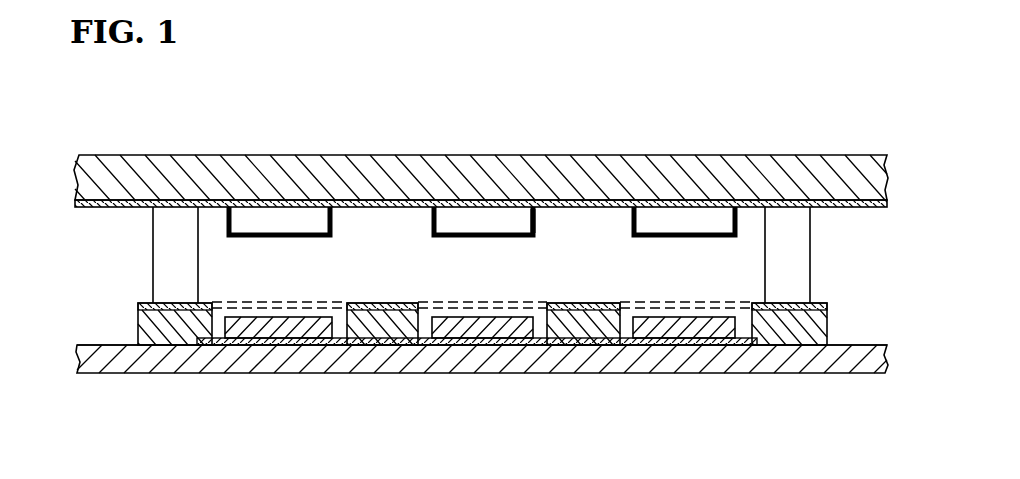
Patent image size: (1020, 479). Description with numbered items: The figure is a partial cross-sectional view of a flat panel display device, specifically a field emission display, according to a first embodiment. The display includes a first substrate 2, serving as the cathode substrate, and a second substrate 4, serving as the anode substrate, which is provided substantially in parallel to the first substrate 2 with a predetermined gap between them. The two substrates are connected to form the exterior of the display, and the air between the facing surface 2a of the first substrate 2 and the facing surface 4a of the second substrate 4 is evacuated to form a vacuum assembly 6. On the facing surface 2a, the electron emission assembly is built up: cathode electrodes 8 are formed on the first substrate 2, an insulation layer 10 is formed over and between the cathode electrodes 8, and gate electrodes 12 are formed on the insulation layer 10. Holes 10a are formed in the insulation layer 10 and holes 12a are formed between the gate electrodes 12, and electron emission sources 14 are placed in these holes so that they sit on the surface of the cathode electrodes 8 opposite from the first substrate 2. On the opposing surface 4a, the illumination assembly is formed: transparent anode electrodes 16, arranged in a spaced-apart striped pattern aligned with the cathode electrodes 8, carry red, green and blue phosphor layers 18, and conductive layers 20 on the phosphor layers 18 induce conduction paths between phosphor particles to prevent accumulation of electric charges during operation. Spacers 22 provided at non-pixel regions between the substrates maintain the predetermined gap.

The first substrate 2 is at (289, 363).
The facing surface of first substrate 2a is at (107, 346).
The second substrate 4 is at (238, 173).
The facing surface of second substrate 4a is at (101, 209).
The vacuum assembly 6 is at (675, 133).
The cathode electrodes 8 is at (480, 346).
The insulation layer 10 is at (384, 340).
The holes in insulation layer 10a is at (537, 307).
The gate electrodes 12 is at (387, 303).
The holes between gate electrodes 12a is at (447, 301).
The electron emission sources 14 is at (517, 343).
The anode electrodes 16 is at (494, 222).
The phosphor layers 18 is at (441, 206).
The conductive layers 20 is at (541, 233).
The spacers 22 is at (158, 269).